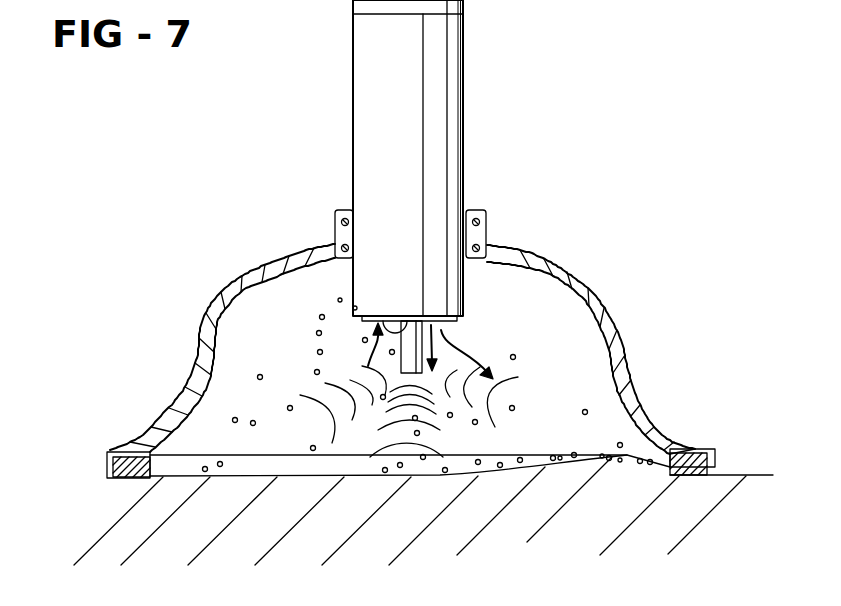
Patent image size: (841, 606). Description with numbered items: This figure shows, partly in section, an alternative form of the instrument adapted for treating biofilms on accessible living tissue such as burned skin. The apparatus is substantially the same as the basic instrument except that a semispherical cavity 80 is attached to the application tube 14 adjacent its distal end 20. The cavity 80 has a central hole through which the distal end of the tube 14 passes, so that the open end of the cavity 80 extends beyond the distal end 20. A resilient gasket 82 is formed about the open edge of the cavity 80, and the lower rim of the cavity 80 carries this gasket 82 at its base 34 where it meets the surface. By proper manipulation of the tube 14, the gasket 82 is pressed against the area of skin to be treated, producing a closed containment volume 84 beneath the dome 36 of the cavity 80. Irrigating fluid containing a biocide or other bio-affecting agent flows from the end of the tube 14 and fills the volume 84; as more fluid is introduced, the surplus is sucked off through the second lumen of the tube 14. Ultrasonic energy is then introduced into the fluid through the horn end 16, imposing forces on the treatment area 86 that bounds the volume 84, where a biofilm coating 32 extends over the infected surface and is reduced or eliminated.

The application tube 14 is at (465, 140).
The distal end 20 is at (408, 350).
The horn end 16 is at (460, 337).
The containment hood interior 36 is at (540, 313).
The closed containment volume 84 is at (582, 353).
The semispherical cavity 80 is at (242, 280).
The hood rim 34 is at (695, 448).
The resilient gasket 82 is at (697, 450).
The biofilm coating 32 is at (483, 472).
The treatment area 86 is at (320, 468).